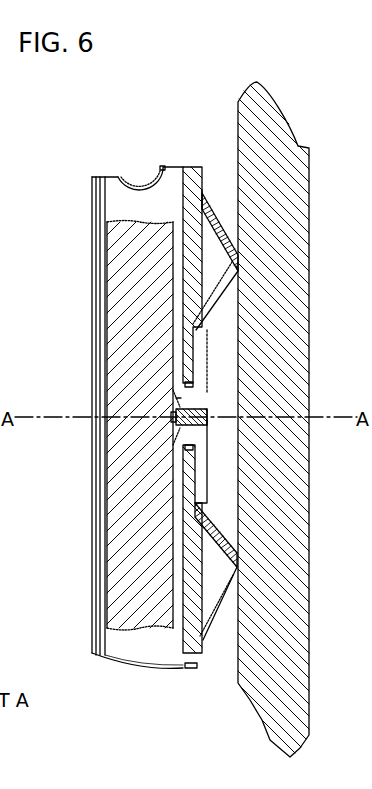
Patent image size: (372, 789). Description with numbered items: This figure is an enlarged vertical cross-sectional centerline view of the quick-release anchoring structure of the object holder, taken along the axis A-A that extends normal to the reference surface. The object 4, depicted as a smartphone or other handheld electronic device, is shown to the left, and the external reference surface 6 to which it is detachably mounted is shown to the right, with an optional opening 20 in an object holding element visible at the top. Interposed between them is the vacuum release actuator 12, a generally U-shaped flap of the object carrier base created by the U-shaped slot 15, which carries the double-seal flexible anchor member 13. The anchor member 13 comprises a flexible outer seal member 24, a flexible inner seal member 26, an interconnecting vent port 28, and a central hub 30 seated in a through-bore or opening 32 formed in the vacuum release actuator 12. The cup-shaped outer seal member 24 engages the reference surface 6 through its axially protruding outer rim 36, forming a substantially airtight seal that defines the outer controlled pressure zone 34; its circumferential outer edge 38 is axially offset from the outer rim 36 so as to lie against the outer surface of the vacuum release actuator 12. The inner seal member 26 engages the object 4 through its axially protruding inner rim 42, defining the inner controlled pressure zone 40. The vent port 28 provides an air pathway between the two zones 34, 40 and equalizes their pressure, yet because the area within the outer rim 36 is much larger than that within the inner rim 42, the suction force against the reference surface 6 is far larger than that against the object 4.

The object 4 is at (118, 260).
The external reference surface 6 is at (317, 183).
The vacuum release actuator 12 is at (193, 602).
The double-seal flexible anchor member 13 is at (181, 450).
The U-shaped slot 15 is at (193, 655).
The opening 20 is at (157, 175).
The outer seal member 24 is at (218, 217).
The inner seal member 26 is at (176, 410).
The vent port 28 is at (197, 415).
The central hub 30 is at (193, 393).
The opening 32 is at (185, 388).
The outer controlled pressure zone 34 is at (220, 386).
The outer rim 36 is at (238, 268).
The circumferential outer edge 38 is at (200, 203).
The inner controlled pressure zone 40 is at (178, 422).
The inner rim 42 is at (178, 398).